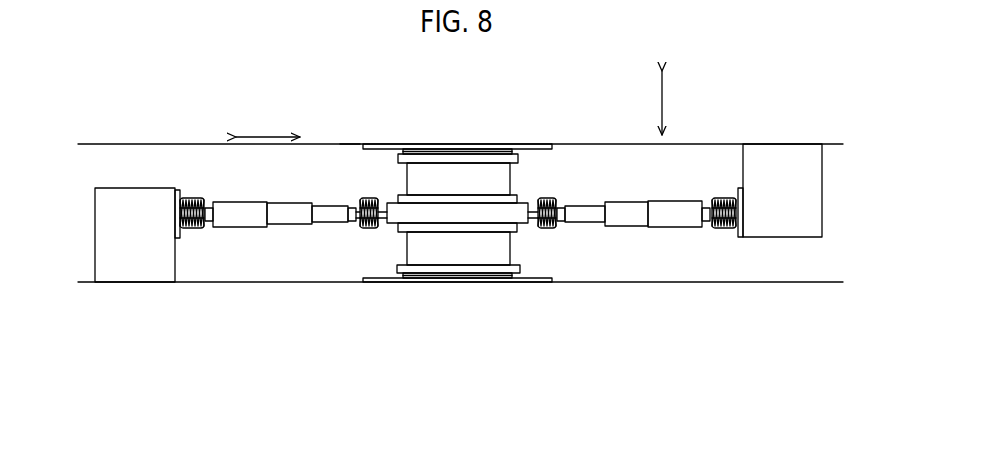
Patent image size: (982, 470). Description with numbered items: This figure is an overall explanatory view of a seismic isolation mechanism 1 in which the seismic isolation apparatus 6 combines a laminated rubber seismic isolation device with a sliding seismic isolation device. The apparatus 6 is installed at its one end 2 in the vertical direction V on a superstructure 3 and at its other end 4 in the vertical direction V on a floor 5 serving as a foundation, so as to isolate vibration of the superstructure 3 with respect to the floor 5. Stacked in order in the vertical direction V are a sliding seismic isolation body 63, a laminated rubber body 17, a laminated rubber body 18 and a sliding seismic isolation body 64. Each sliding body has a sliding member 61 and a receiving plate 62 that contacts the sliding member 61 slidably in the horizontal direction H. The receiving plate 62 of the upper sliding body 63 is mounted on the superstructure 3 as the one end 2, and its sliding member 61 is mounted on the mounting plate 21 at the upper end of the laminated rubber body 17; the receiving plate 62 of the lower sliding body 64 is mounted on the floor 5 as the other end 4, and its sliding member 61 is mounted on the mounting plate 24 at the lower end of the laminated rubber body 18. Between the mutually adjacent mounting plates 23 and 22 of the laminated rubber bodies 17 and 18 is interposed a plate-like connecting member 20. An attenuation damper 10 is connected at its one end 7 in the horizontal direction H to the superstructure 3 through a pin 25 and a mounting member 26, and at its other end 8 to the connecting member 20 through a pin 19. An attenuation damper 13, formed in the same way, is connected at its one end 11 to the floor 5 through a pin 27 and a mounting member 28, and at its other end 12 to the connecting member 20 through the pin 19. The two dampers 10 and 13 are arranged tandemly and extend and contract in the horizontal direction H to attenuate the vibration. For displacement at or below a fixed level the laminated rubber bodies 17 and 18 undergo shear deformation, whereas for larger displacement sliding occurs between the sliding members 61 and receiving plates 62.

The seismic isolation mechanism 1 is at (343, 140).
The one end 2 is at (537, 146).
The superstructure 3 is at (344, 146).
The other end 4 is at (374, 280).
The floor 5 is at (277, 281).
The seismic isolation apparatus 6 is at (462, 213).
The one end 7 is at (720, 197).
The other end 8 is at (556, 222).
The attenuation damper 10 is at (642, 199).
The one end 11 is at (191, 197).
The other end 12 is at (376, 227).
The attenuation damper 13 is at (260, 199).
The laminated rubber body 17 is at (490, 175).
The laminated rubber body 18 is at (483, 247).
The pin 19 is at (367, 226).
The connecting member 20 is at (463, 215).
The mounting plate 21 is at (418, 158).
The mounting plate 22 is at (432, 228).
The mounting plate 23 is at (438, 200).
The mounting plate 24 is at (500, 271).
The pin 25 is at (728, 229).
The mounting member 26 is at (782, 170).
The pin 27 is at (197, 230).
The mounting member 28 is at (135, 257).
The sliding member 61 is at (440, 151).
The receiving plate 62 is at (502, 151).
The sliding seismic isolation body 63 is at (452, 213).
The sliding seismic isolation body 64 is at (451, 293).
The horizontal direction H is at (268, 135).
The vertical direction V is at (663, 100).